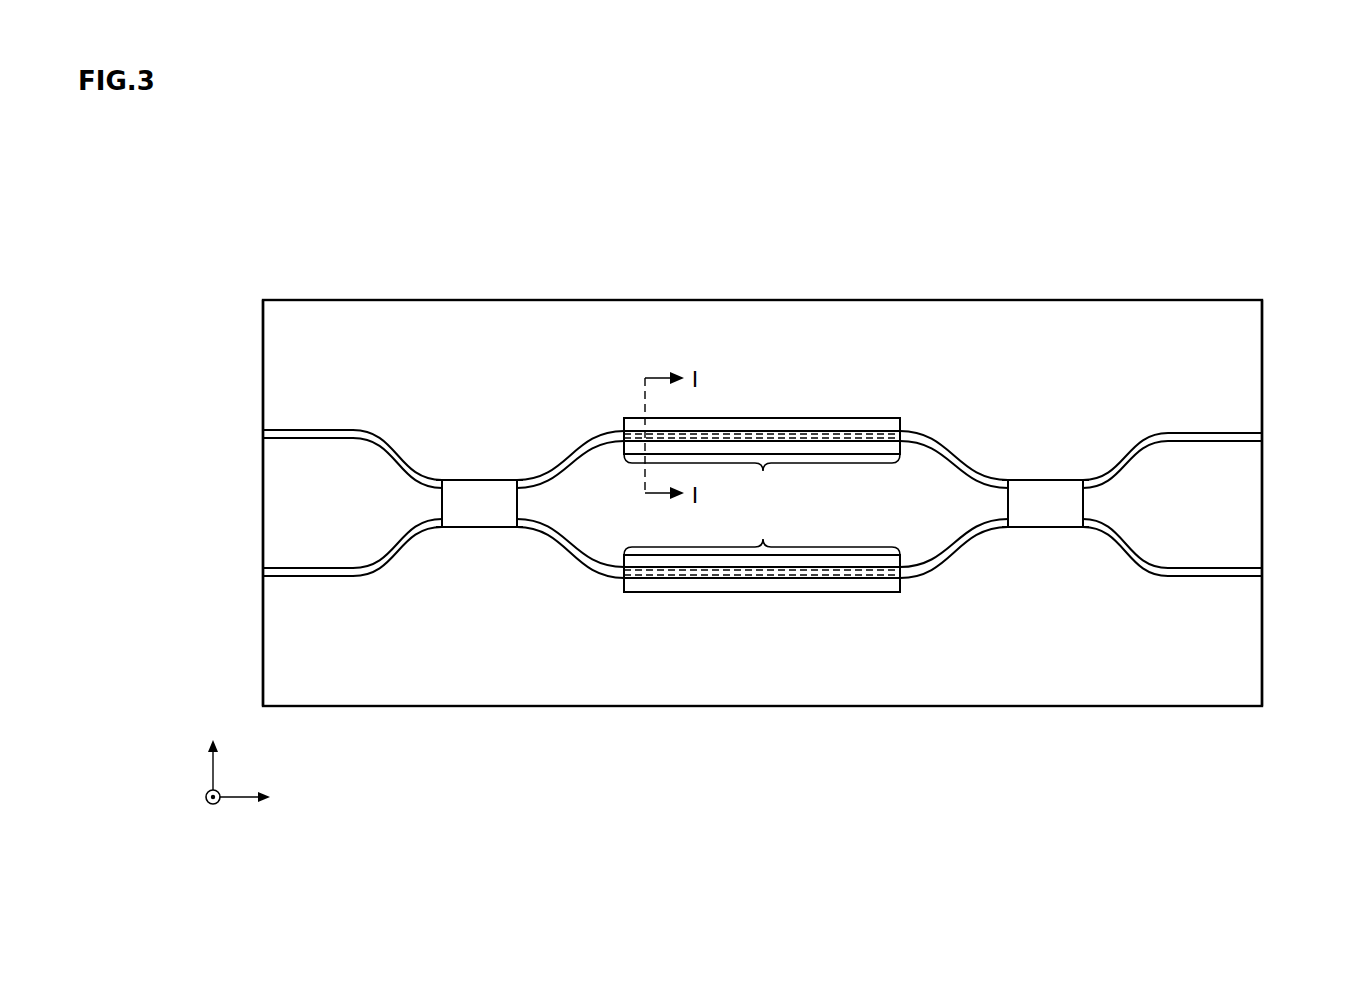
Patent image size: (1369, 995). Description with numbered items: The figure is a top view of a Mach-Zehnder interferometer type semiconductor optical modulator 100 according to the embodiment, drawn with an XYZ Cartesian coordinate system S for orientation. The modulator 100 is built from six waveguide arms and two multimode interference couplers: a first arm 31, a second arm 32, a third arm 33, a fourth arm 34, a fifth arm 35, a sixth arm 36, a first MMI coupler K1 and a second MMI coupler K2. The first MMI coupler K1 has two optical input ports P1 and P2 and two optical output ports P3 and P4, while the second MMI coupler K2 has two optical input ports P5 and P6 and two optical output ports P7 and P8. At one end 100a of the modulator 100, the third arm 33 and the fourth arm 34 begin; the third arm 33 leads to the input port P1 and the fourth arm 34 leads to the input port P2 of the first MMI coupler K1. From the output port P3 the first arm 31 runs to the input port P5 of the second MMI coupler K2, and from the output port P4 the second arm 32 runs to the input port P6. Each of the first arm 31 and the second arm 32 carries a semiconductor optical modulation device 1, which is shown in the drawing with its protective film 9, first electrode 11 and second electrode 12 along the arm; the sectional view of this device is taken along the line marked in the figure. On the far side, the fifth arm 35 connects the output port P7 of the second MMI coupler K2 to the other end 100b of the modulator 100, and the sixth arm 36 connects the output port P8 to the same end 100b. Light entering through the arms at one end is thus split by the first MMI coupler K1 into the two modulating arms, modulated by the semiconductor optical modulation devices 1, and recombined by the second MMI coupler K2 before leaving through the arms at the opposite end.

The Mach-Zehnder interferometer type semiconductor optical modulator 100 is at (290, 197).
The one end of the modulator 100a is at (1268, 323).
The other end of the modulator 100b is at (257, 321).
The semiconductor optical modulation device 1 is at (762, 504).
The protective film 9 is at (724, 423).
The first electrode 11 is at (858, 448).
The second electrode 12 is at (836, 436).
The first arm 31 is at (578, 446).
The second arm 32 is at (581, 561).
The third arm 33 is at (1215, 431).
The fourth arm 34 is at (1215, 578).
The fifth arm 35 is at (308, 428).
The sixth arm 36 is at (305, 578).
The first multimode interference coupler K1 is at (1043, 497).
The second MMI coupler K2 is at (482, 497).
The optical input port P1 is at (1093, 478).
The optical input port P2 is at (1093, 530).
The optical output port P3 is at (1000, 478).
The optical output port P4 is at (1000, 530).
The optical input port P5 is at (528, 478).
The optical input port P6 is at (528, 530).
The optical output port P7 is at (434, 478).
The optical output port P8 is at (434, 530).
The XYZ Cartesian coordinate system S is at (213, 768).